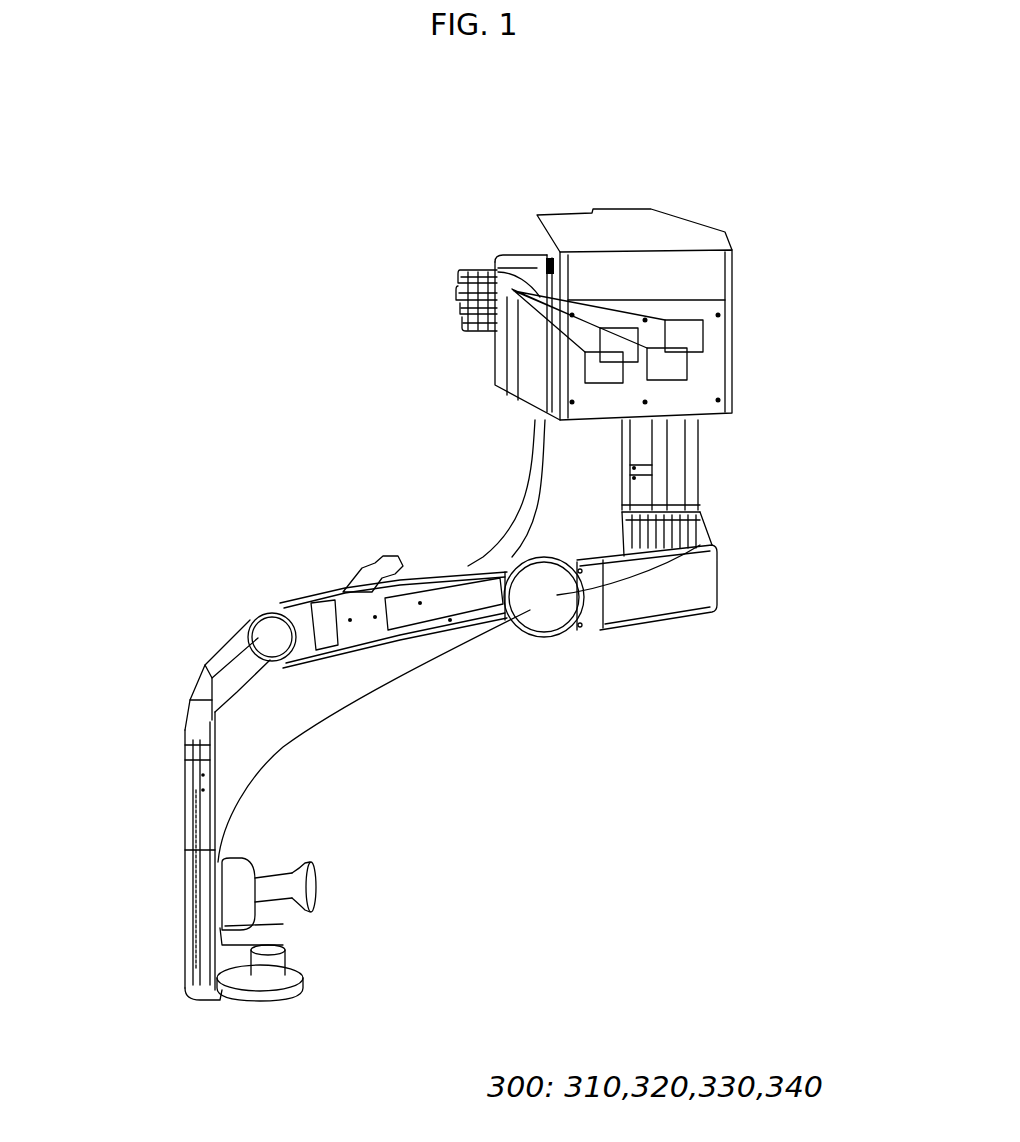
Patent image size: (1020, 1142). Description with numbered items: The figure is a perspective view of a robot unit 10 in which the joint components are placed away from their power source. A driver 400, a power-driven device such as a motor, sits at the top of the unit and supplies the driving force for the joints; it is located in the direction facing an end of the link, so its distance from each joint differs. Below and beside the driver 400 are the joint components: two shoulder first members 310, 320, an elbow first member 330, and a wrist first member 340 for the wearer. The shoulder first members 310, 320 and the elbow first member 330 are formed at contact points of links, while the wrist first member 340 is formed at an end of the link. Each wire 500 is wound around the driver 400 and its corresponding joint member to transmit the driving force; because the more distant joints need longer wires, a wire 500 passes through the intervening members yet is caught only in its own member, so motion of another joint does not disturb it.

The robot unit 10 is at (495, 250).
The shoulder first member 310 is at (693, 512).
The shoulder first member 320 is at (543, 598).
The elbow first member 330 is at (212, 663).
The wrist first member 340 is at (197, 987).
The driver 400 is at (703, 328).
The wire 500 is at (693, 473).